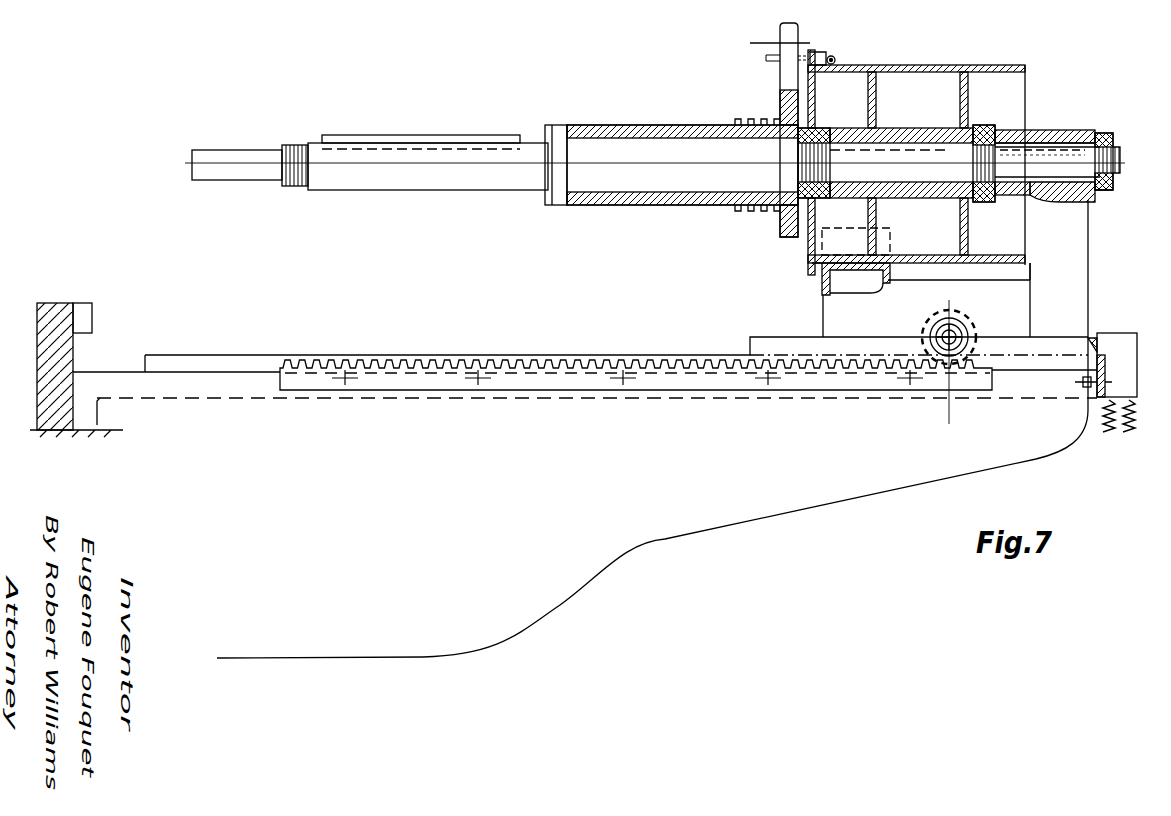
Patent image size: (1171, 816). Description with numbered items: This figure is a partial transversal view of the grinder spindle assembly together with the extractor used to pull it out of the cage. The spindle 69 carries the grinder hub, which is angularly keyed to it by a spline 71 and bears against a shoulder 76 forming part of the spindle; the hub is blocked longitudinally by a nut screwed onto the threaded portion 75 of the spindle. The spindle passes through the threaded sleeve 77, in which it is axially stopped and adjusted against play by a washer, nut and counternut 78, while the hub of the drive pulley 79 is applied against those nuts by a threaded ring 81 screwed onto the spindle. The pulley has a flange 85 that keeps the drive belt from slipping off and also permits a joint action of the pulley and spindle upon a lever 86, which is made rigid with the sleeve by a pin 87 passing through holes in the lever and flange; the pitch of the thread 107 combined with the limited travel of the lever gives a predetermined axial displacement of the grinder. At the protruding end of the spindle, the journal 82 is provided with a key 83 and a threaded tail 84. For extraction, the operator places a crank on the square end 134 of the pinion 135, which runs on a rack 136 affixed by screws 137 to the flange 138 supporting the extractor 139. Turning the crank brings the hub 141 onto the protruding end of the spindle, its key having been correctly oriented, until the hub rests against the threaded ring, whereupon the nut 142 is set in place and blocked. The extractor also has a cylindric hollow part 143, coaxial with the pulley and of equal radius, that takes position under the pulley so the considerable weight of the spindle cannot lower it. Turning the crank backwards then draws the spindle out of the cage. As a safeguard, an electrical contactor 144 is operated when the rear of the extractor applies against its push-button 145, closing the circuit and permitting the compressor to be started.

The spindle 69 is at (436, 180).
The spline 71 is at (418, 136).
The threaded portion 75 is at (293, 187).
The shoulder 76 is at (556, 200).
The threaded sleeve 77 is at (665, 200).
The thread 107 is at (760, 212).
The lever 86 is at (778, 27).
The pin 87 is at (824, 53).
The washer, nut and counternut 78 is at (826, 132).
The drive pulley 79 is at (915, 66).
The threaded ring 81 is at (985, 127).
The key 83 is at (1036, 130).
The hub 141 is at (1062, 133).
The journal 82 is at (1088, 198).
The threaded tail 84 is at (1116, 152).
The nut 142 is at (1112, 190).
The extractor 139 is at (1067, 259).
The flange 85 is at (808, 258).
The cylindric hollow part 143 is at (822, 280).
The square end 134 is at (967, 325).
The pinion 135 is at (925, 330).
The rack 136 is at (826, 380).
The screws 137 is at (768, 378).
The flange 138 is at (585, 497).
The electrical contactor 144 is at (1122, 370).
The push-button 145 is at (1093, 340).